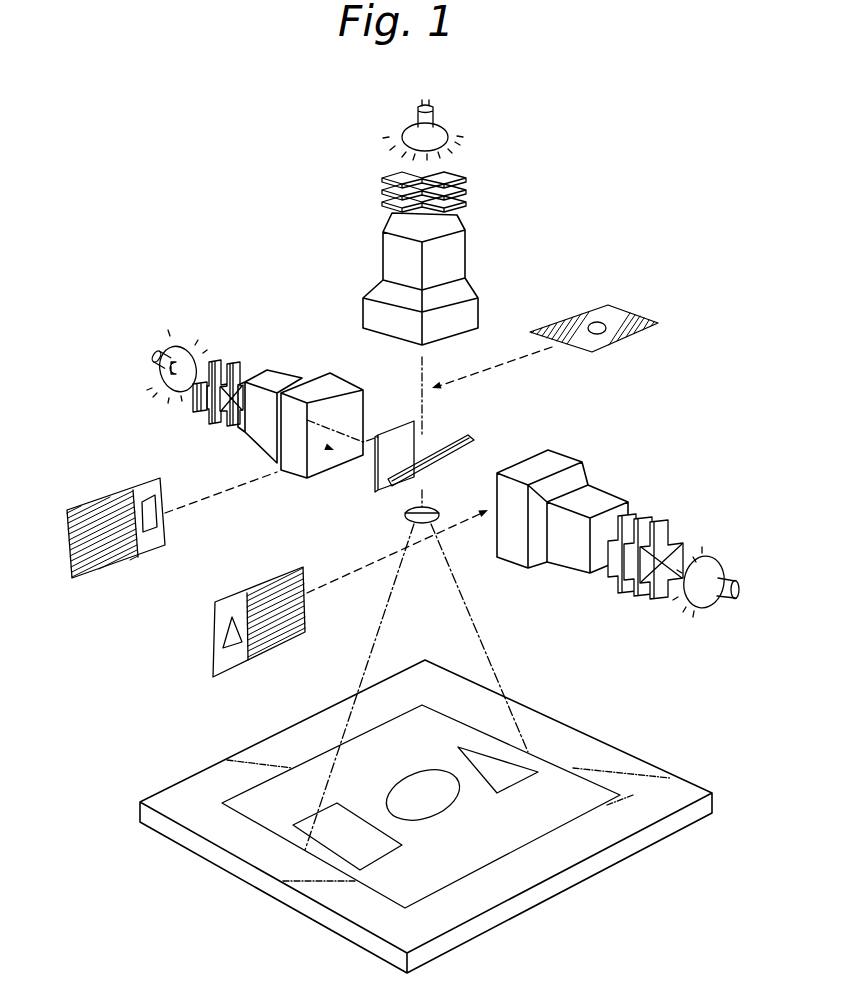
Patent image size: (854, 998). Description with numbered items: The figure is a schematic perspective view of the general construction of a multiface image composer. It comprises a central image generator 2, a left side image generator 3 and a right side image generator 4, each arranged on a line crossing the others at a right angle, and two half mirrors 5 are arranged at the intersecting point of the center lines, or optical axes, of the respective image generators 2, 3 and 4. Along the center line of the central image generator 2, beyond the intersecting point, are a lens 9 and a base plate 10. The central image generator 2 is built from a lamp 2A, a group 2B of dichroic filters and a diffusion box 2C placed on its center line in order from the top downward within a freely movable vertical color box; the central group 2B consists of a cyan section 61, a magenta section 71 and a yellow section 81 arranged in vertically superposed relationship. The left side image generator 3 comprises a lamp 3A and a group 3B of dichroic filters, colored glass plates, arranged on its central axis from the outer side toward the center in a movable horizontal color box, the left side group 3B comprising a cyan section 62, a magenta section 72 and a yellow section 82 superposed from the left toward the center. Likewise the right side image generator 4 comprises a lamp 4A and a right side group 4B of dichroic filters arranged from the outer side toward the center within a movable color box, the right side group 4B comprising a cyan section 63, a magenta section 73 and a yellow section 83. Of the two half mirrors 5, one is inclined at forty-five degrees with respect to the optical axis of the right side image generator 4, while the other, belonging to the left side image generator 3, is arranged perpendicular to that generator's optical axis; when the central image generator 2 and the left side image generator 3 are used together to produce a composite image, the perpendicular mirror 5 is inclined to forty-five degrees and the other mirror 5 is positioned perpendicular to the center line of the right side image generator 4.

The central image generator 2 is at (433, 212).
The lamp 2A is at (408, 132).
The group of dichroic filters 2B is at (413, 173).
The diffusion box 2C is at (476, 270).
The cyan section 61 is at (457, 172).
The magenta section 71 is at (468, 197).
The yellow section 81 is at (468, 204).
The left side image generator 3 is at (252, 377).
The lamp 3A is at (177, 345).
The group of dichroic filters 3B is at (253, 351).
The cyan section 62 is at (223, 360).
The magenta section 72 is at (228, 362).
The yellow section 82 is at (243, 370).
The right side image generator 4 is at (618, 559).
The lamp 4A is at (716, 563).
The right side group of dichroic filters 4B is at (663, 562).
The cyan section 63 is at (670, 522).
The magenta section 73 is at (657, 513).
The yellow section 83 is at (643, 510).
The half mirror 5 is at (379, 478).
The lens 9 is at (403, 522).
The base plate 10 is at (668, 780).